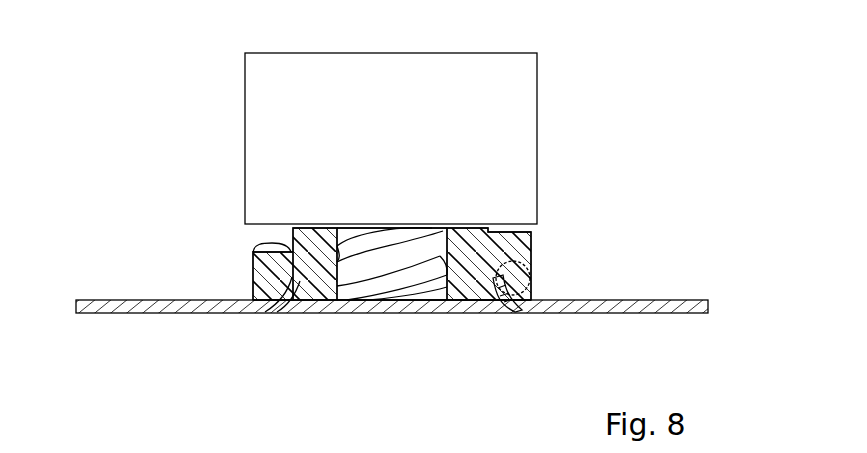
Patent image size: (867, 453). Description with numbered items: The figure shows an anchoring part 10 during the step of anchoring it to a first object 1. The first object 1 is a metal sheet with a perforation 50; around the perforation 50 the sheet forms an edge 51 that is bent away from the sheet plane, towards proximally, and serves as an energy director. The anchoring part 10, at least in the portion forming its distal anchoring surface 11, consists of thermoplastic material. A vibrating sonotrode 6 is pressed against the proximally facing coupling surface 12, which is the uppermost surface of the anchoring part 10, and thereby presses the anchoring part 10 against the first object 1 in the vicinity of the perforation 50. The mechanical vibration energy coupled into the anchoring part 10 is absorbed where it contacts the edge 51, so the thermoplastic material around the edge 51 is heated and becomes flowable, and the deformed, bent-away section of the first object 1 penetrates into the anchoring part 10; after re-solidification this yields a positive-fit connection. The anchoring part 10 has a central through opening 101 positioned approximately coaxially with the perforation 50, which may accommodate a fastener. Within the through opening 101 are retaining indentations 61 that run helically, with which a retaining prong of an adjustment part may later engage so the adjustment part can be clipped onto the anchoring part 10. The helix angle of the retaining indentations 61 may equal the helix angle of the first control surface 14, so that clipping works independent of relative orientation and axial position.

The first object 1 is at (672, 302).
The sonotrode 6 is at (488, 143).
The anchoring part 10 is at (302, 261).
The anchoring surface 11 is at (473, 305).
The coupling surface 12 is at (471, 227).
The first control surface 14 is at (258, 246).
The perforation 50 is at (342, 323).
The edge 51 is at (530, 261).
The retaining indentation 61 is at (401, 238).
The central through opening 101 is at (401, 292).